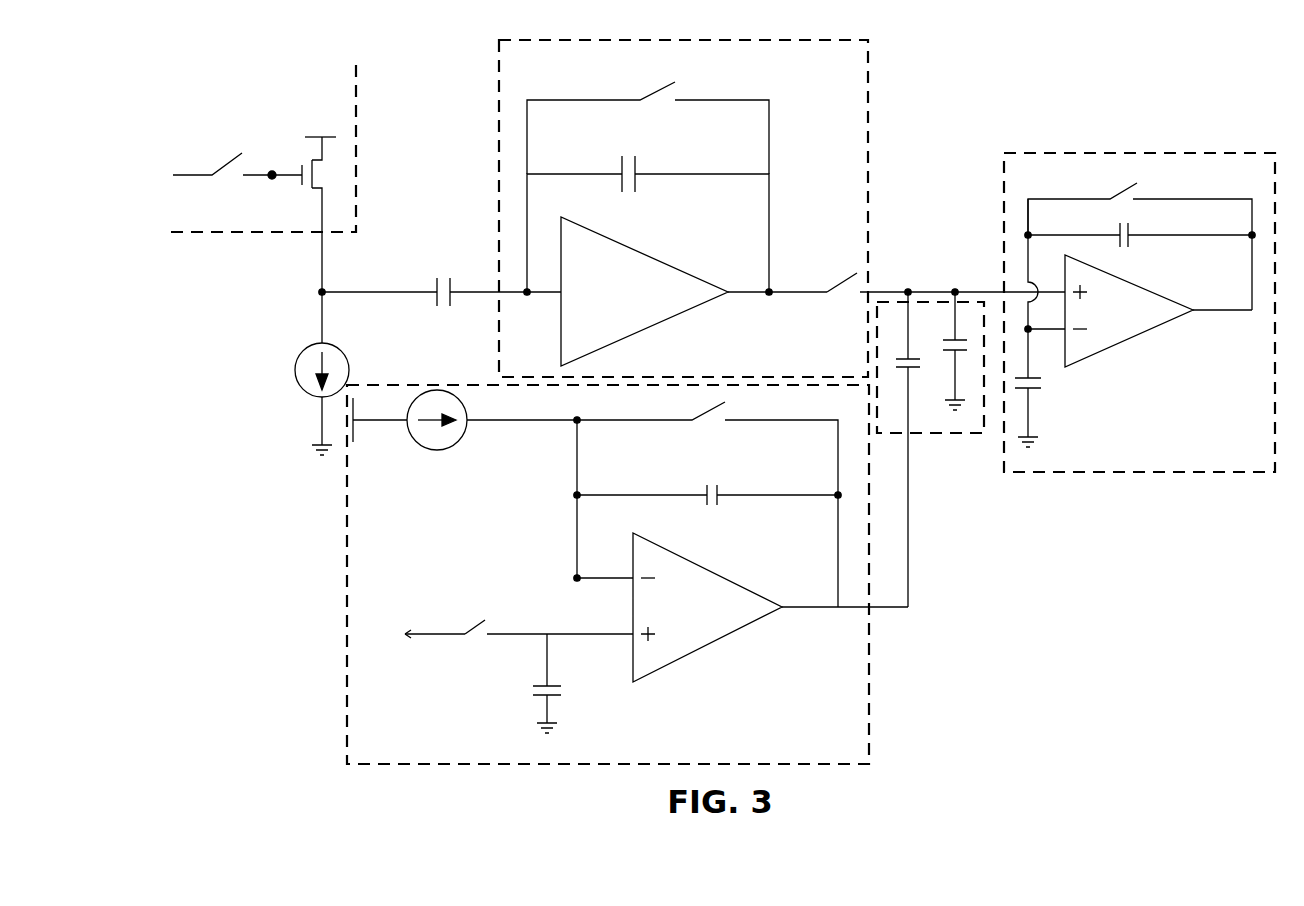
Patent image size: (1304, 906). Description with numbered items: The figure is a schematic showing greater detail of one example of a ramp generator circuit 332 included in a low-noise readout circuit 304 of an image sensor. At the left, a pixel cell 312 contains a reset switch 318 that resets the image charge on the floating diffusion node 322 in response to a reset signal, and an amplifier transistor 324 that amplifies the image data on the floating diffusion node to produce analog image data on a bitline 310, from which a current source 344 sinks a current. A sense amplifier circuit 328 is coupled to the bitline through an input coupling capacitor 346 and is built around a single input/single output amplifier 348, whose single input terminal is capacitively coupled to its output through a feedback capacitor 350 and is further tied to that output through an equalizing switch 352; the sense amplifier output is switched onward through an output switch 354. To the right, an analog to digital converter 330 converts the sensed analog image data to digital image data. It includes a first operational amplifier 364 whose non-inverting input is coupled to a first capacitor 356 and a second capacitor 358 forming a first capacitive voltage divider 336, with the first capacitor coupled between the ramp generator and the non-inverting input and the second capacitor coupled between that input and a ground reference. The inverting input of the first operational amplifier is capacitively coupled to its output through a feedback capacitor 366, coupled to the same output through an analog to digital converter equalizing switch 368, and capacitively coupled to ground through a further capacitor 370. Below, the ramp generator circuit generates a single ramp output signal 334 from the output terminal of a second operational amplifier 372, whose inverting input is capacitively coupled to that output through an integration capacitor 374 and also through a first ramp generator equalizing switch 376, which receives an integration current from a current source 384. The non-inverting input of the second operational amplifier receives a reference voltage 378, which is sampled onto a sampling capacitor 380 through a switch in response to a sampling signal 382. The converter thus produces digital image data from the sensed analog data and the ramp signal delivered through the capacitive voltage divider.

The readout circuit 304 is at (1153, 77).
The pixel cell 312 is at (226, 235).
The reset switch 318 is at (210, 160).
The floating diffusion FD node 322 is at (272, 174).
The amplifier transistor SF 324 is at (316, 190).
The bitline 310 is at (321, 292).
The current source 344 is at (298, 354).
The input coupling capacitor Cin 346 is at (430, 280).
The sense amplifier circuit 328 is at (498, 55).
The amplifier SA1 348 is at (664, 264).
The capacitor C5 350 is at (646, 166).
The equalizing switch EQ 352 is at (646, 87).
The switch SP0 354 is at (828, 278).
The first capacitor C1 356 is at (897, 362).
The second capacitor C2 358 is at (958, 336).
The first capacitive voltage divider 336 is at (976, 434).
The analog to digital converter 330 is at (1003, 167).
The first operational amplifier 364 is at (1150, 291).
The capacitor C6 366 is at (1110, 230).
The analog to digital converter equalizing switch AZ1 368 is at (1110, 190).
The capacitor C7 370 is at (1034, 398).
The ramp generator circuit 332 is at (346, 678).
The current source 384 is at (466, 440).
The first ramp generator equalizing switch S1 376 is at (690, 417).
The capacitor Cint 374 is at (702, 490).
The second operational amplifier 372 is at (729, 583).
The voltage VRN 378 is at (366, 620).
The SAMP_VRN signal 382 is at (486, 590).
The capacitor C8 380 is at (531, 687).
The RAMP_SIGNAL 334 is at (910, 644).